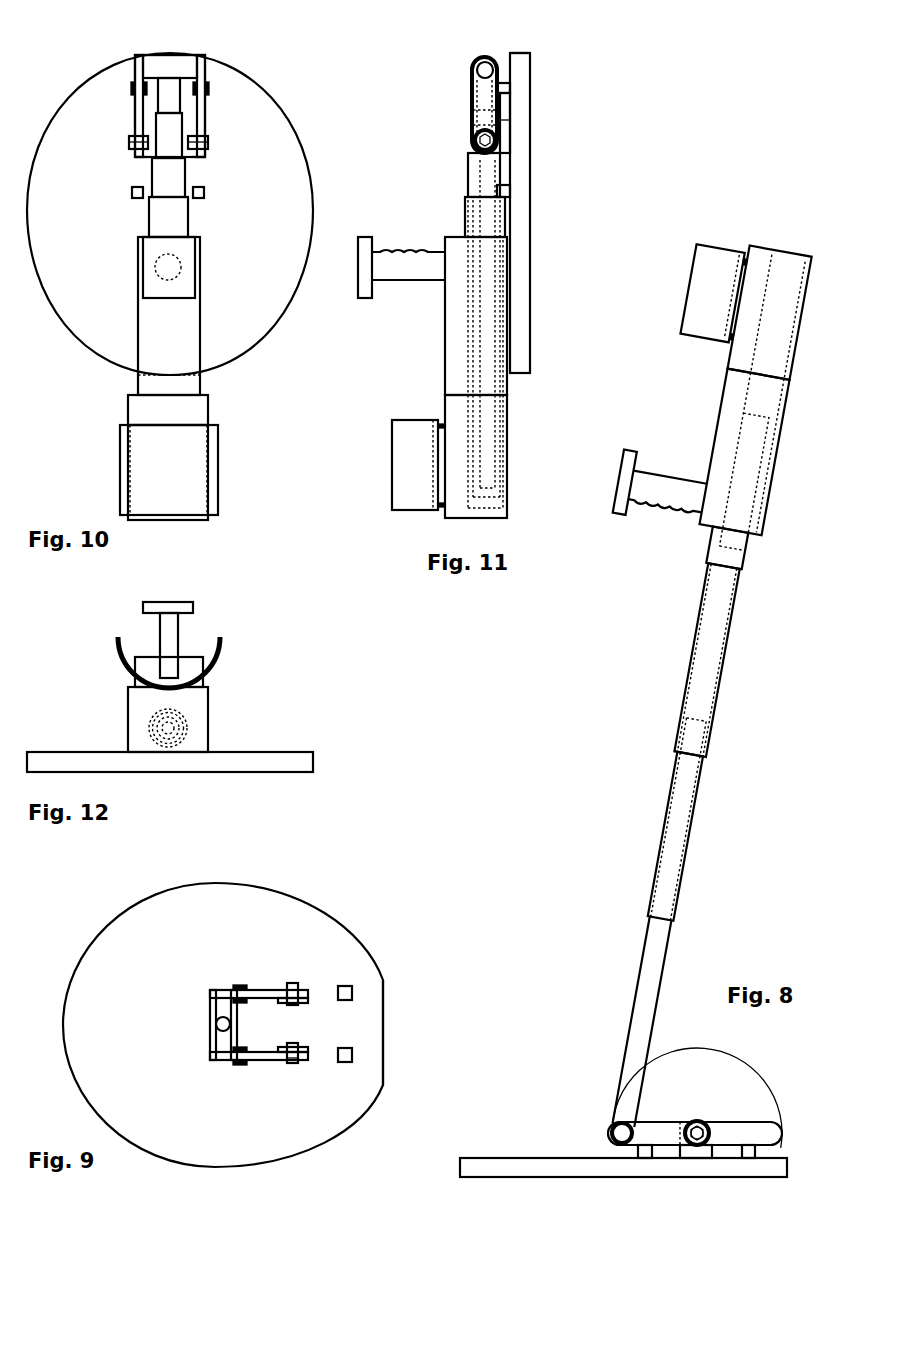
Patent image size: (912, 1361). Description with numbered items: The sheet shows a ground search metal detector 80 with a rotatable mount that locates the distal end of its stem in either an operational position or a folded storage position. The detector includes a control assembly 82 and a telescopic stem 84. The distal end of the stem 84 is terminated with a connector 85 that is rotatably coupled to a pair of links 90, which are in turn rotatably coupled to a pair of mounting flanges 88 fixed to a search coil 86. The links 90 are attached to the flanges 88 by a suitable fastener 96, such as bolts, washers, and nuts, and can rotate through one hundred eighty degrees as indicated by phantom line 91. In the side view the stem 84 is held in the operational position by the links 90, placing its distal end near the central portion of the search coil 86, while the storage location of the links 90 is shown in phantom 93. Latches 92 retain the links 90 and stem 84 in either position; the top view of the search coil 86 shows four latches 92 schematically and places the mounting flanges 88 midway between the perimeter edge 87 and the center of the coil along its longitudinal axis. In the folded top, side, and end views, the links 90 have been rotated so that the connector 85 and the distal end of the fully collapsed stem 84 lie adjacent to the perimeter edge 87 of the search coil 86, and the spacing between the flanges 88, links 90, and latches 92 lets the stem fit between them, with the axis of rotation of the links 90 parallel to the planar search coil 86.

In FIG. 10, the ground search metal detector 80 is at (170, 268).
In FIG. 12, the ground search metal detector 80 is at (170, 687).
In FIG. 9, the ground search metal detector 80 is at (244, 1025).
In FIG. 11, the ground search metal detector 80 is at (464, 266).
In FIG. 8, the ground search metal detector 80 is at (643, 696).
In FIG. 10, the control assembly 82 is at (208, 416).
In FIG. 12, the control assembly 82 is at (128, 716).
In FIG. 11, the control assembly 82 is at (445, 381).
In FIG. 8, the control assembly 82 is at (760, 248).
In FIG. 10, the stem 84 is at (180, 100).
In FIG. 12, the stem 84 is at (185, 718).
In FIG. 9, the stem 84 is at (226, 1040).
In FIG. 11, the stem 84 is at (472, 100).
In FIG. 8, the stem 84 is at (745, 388).
In FIG. 10, the connector 85 is at (168, 55).
In FIG. 9, the connector 85 is at (213, 1016).
In FIG. 11, the connector 85 is at (475, 66).
In FIG. 8, the connector 85 is at (610, 1126).
In FIG. 10, the search coil 86 is at (70, 349).
In FIG. 12, the search coil 86 is at (272, 752).
In FIG. 9, the search coil 86 is at (63, 960).
In FIG. 11, the search coil 86 is at (530, 292).
In FIG. 8, the search coil 86 is at (498, 1158).
In FIG. 10, the perimeter edge 87 is at (205, 55).
In FIG. 9, the perimeter edge 87 is at (383, 1000).
In FIG. 11, the perimeter edge 87 is at (526, 53).
In FIG. 8, the perimeter edge 87 is at (787, 1172).
In FIG. 10, the mounting flanges 88 is at (143, 157).
In FIG. 9, the mounting flanges 88 is at (306, 1003).
In FIG. 11, the mounting flanges 88 is at (474, 140).
In FIG. 8, the mounting flanges 88 is at (697, 1120).
In FIG. 10, the links 90 is at (135, 110).
In FIG. 9, the links 90 is at (265, 990).
In FIG. 11, the links 90 is at (472, 112).
In FIG. 8, the links 90 is at (668, 1122).
In FIG. 11, the phantom line 91 is at (401, 267).
In FIG. 8, the phantom line 91 is at (735, 1054).
In FIG. 10, the latches 92 is at (135, 85).
In FIG. 9, the latches 92 is at (240, 1003).
In FIG. 11, the latches 92 is at (500, 83).
In FIG. 8, the latches 92 is at (638, 1155).
In FIG. 8, the phantom 93 is at (766, 1122).
In FIG. 10, the fastener 96 is at (129, 142).
In FIG. 9, the fastener 96 is at (290, 983).
In FIG. 8, the fastener 96 is at (708, 1124).